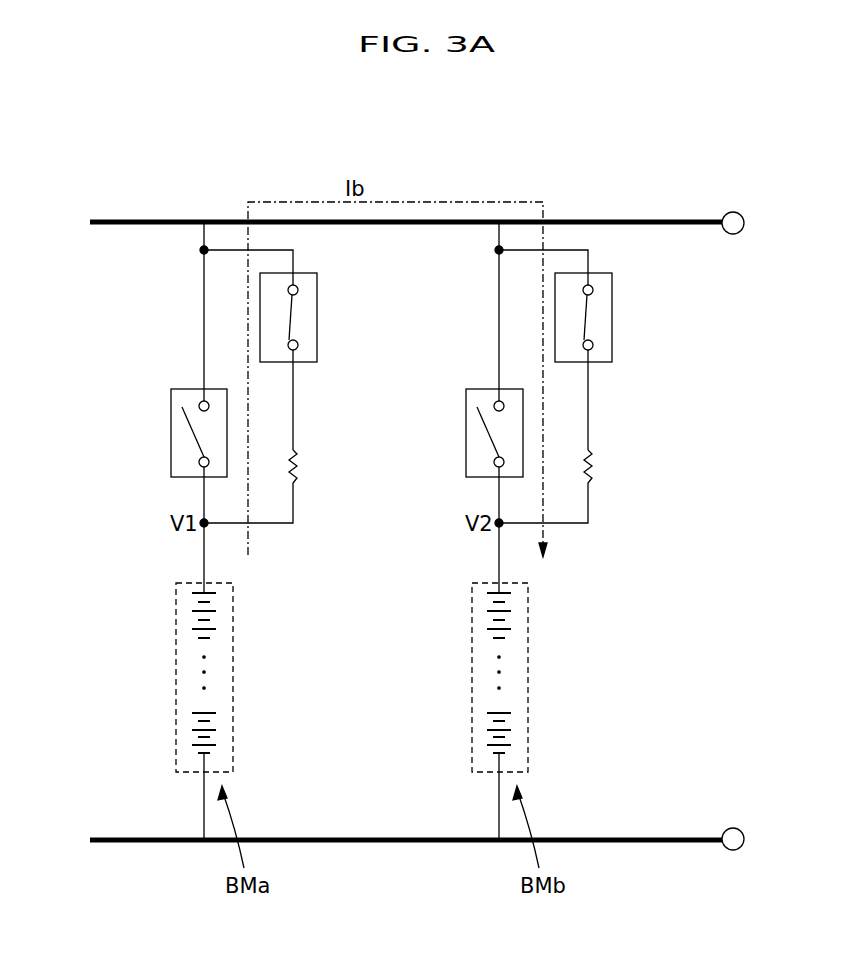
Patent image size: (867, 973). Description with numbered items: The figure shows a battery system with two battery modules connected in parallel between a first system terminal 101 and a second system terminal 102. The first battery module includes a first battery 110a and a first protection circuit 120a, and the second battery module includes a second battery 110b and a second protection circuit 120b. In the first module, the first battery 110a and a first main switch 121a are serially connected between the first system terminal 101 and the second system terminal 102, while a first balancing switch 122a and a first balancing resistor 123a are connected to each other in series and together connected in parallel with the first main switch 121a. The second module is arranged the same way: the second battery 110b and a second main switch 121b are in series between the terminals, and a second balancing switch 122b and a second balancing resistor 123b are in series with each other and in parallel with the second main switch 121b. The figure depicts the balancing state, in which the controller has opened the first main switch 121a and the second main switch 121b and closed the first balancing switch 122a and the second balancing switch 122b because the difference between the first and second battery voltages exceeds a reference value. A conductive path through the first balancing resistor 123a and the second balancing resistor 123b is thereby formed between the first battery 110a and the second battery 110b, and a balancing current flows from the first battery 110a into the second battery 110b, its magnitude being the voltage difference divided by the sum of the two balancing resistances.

The first system terminal 101 is at (733, 234).
The second system terminal 102 is at (733, 850).
The first battery 110a is at (233, 680).
The second battery 110b is at (528, 680).
The first protection circuit 120a is at (88, 510).
The second protection circuit 120b is at (735, 518).
The first main switch 121a is at (171, 415).
The second main switch 121b is at (523, 412).
The first balancing switch 122a is at (260, 327).
The second balancing switch 122b is at (612, 340).
The first balancing resistor 123a is at (291, 472).
The second balancing resistor 123b is at (592, 485).